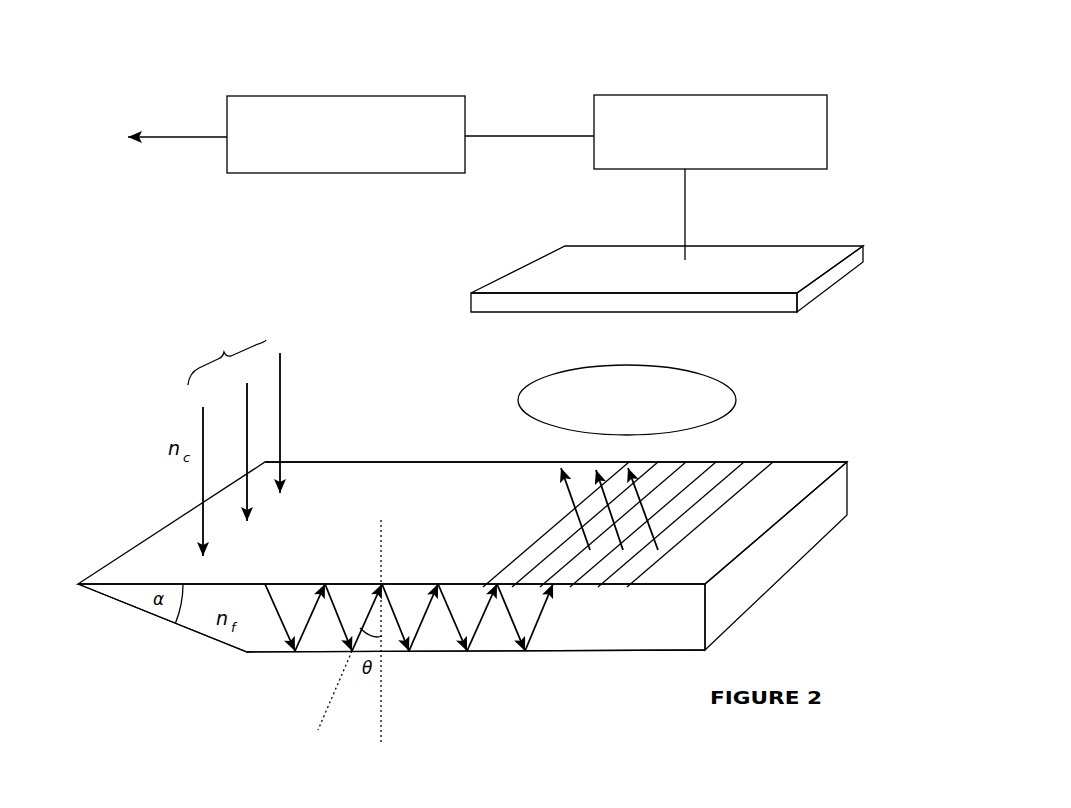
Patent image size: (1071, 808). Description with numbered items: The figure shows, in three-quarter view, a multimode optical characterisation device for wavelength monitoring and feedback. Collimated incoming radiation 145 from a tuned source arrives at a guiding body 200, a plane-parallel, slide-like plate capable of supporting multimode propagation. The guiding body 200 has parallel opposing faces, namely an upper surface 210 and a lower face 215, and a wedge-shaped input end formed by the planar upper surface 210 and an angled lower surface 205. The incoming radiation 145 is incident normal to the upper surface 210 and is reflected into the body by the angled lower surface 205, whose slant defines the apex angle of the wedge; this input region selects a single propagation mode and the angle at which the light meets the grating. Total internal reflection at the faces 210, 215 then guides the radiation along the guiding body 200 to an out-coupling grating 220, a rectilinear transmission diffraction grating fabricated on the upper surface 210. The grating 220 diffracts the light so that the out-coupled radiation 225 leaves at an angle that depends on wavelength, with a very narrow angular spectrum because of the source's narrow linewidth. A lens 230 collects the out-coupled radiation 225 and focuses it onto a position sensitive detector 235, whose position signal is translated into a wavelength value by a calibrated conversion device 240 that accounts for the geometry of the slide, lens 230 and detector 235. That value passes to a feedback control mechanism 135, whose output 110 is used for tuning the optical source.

The feedback control output 110 is at (193, 137).
The feedback control mechanism 135 is at (345, 160).
The collimated incoming radiation 145 is at (225, 438).
The guiding body 200 is at (140, 510).
The angled lower surface 205 is at (203, 635).
The upper surface 210 is at (398, 482).
The lower parallel face 215 is at (612, 651).
The out-coupling grating 220 is at (697, 478).
The out-coupled radiation 225 is at (567, 502).
The lens 230 is at (532, 383).
The position sensitive detector 235 is at (743, 302).
The calibrated conversion device 240 is at (698, 96).